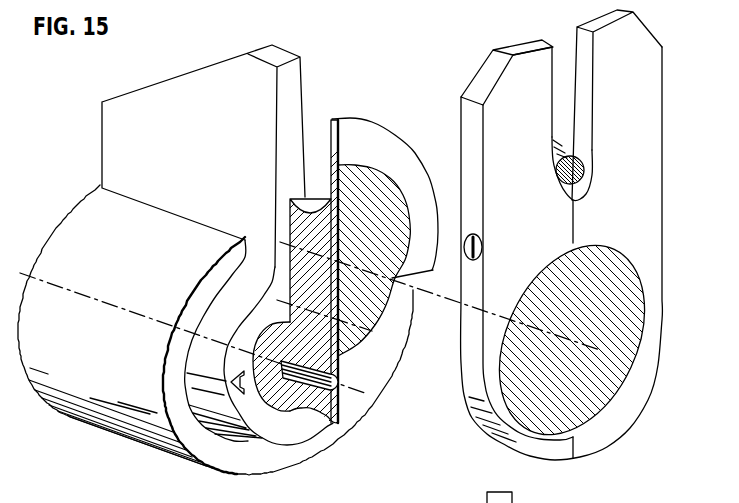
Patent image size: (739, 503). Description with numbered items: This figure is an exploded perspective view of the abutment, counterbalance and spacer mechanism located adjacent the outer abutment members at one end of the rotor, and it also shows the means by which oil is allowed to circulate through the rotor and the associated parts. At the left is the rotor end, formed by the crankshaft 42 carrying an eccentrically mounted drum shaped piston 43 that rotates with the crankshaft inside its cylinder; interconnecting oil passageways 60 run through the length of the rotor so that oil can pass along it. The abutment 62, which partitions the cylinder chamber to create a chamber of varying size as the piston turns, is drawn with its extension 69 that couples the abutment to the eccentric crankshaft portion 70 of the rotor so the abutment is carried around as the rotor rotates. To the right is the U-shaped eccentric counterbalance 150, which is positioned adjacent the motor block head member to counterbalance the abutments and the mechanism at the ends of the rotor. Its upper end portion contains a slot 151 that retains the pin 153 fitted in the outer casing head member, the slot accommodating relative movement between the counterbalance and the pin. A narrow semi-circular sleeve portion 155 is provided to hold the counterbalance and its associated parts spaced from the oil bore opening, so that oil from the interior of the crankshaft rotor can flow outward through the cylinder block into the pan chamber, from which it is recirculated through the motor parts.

The crankshaft 42 is at (600, 402).
The drum shaped piston 43 is at (238, 478).
The interconnecting oil passageway 60 is at (333, 382).
The abutment 62 is at (290, 88).
The extension 69 is at (208, 316).
The eccentric crankshaft portion 70 is at (276, 393).
The U-shaped eccentric counterbalance 150 is at (659, 161).
The slot 151 is at (558, 43).
The pin 153 is at (578, 166).
The semi-circular sleeve portion 155 is at (391, 147).